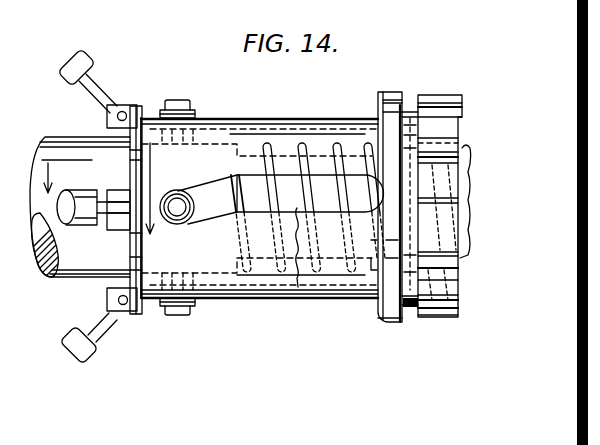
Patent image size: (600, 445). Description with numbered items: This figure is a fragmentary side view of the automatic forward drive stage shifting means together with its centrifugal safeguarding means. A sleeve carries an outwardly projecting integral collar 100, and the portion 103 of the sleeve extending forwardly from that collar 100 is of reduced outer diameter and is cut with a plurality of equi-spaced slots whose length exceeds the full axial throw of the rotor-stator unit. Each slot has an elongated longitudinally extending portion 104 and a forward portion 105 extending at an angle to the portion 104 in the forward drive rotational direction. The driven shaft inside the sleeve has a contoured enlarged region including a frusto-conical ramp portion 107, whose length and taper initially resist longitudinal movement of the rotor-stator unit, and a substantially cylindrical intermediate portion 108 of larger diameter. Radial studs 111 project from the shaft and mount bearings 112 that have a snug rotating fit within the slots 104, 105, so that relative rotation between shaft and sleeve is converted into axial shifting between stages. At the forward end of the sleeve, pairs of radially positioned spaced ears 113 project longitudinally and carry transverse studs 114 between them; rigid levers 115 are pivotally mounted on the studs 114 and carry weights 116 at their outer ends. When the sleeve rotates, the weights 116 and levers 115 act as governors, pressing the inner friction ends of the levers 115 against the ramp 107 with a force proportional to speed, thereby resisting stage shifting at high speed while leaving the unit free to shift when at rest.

The collar 100 is at (392, 92).
The reduced diameter sleeve portion 103 is at (312, 123).
The longitudinally extending slot portion 104 is at (318, 298).
The angled forward slot portion 105 is at (217, 213).
The frusto-conical ramp portion 107 is at (131, 270).
The cylindrical intermediate portion 108 is at (60, 278).
The radial stud 111 is at (178, 100).
The bearing 112 is at (197, 110).
The ear 113 is at (125, 108).
The transverse stud 114 is at (117, 117).
The lever 115 is at (100, 85).
The weight 116 is at (75, 62).